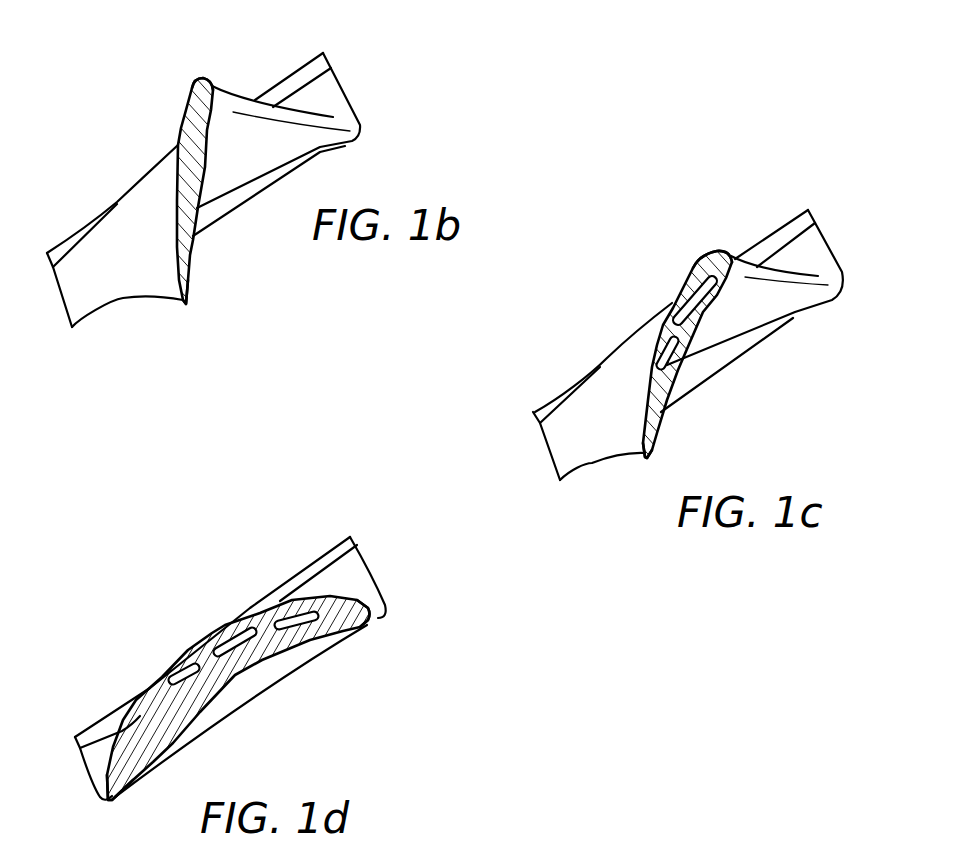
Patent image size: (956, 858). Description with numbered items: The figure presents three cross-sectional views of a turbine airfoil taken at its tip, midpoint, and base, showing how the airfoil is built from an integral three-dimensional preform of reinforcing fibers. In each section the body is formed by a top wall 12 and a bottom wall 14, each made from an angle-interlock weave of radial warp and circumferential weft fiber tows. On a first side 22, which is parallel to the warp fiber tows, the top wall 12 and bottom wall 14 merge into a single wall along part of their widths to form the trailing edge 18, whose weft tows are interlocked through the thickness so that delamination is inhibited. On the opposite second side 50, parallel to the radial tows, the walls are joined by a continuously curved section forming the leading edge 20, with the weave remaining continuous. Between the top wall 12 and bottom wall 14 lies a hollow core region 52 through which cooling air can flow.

In FIG. 1b, the top wall 12 is at (190, 100).
In FIG. 1c, the top wall 12 is at (700, 280).
In FIG. 1d, the top wall 12 is at (214, 632).
In FIG. 1b, the bottom wall 14 is at (193, 262).
In FIG. 1c, the bottom wall 14 is at (660, 424).
In FIG. 1d, the bottom wall 14 is at (285, 650).
In FIG. 1b, the trailing edge 18 is at (187, 304).
In FIG. 1c, the trailing edge 18 is at (646, 458).
In FIG. 1d, the trailing edge 18 is at (108, 803).
In FIG. 1b, the leading edge 20 is at (203, 79).
In FIG. 1c, the leading edge 20 is at (722, 252).
In FIG. 1d, the leading edge 20 is at (373, 611).
In FIG. 1d, the first side 22 is at (125, 729).
In FIG. 1d, the second side 50 is at (313, 595).
In FIG. 1d, the hollow core region 52 is at (213, 672).